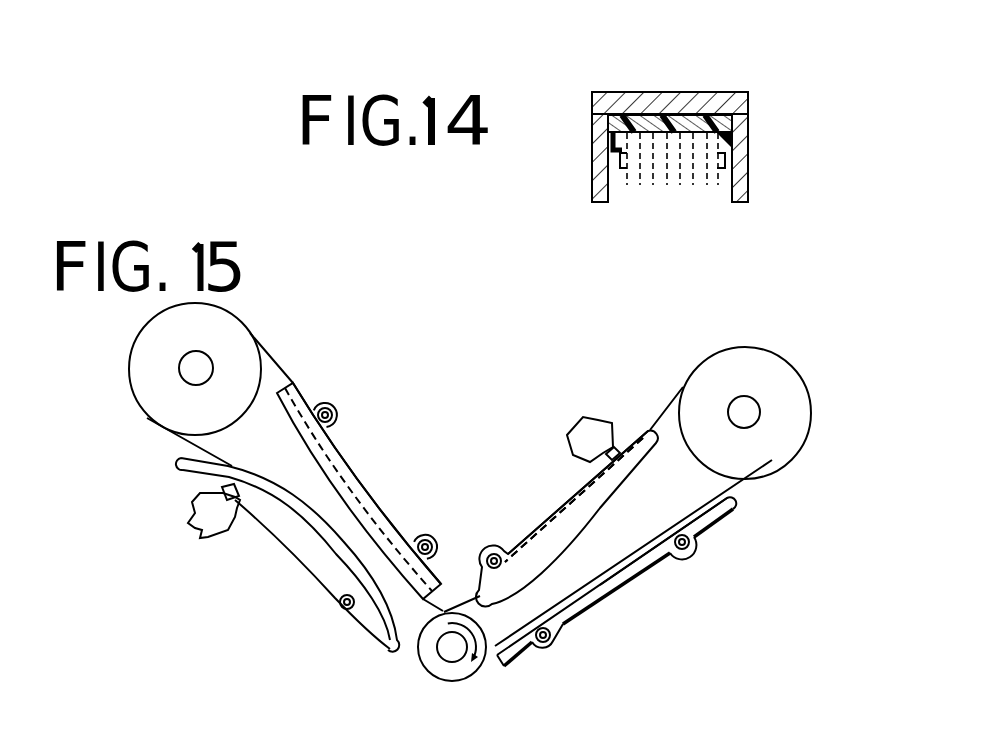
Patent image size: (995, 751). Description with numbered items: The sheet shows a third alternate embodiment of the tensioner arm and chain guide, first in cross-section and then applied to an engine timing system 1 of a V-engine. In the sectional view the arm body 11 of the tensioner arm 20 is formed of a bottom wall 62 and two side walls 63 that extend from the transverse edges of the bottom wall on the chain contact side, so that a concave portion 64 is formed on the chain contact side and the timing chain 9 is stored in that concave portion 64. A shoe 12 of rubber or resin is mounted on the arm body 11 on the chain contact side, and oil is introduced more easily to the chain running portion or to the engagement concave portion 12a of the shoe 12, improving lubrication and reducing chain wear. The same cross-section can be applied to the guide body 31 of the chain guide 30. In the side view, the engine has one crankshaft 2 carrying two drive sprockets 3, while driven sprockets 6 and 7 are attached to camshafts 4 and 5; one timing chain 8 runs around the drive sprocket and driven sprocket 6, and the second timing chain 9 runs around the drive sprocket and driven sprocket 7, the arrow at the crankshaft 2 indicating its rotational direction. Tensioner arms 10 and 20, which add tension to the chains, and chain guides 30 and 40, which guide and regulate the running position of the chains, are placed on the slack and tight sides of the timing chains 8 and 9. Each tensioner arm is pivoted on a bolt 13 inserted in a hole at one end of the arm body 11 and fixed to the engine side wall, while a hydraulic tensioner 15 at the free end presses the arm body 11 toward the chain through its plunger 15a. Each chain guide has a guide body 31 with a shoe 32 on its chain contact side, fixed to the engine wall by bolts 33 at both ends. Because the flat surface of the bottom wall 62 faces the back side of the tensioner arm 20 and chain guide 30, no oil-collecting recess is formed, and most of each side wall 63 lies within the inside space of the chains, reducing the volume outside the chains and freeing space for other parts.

In FIG. 15, the engine timing system 1 is at (467, 358).
In FIG. 15, the crankshaft 2 is at (437, 632).
In FIG. 15, the drive sprocket 3 is at (455, 669).
In FIG. 15, the camshaft 4 is at (197, 367).
In FIG. 15, the camshaft 5 is at (746, 412).
In FIG. 15, the driven sprocket 6 is at (163, 394).
In FIG. 15, the driven sprocket 7 is at (765, 460).
In FIG. 15, the timing chain 8 is at (271, 362).
In FIG. 14, the timing chain 9 is at (660, 190).
In FIG. 15, the timing chain 9 is at (743, 487).
In FIG. 15, the tensioner arm 10 is at (312, 570).
In FIG. 14, the main body 11 is at (679, 161).
In FIG. 15, the main body 11 is at (290, 527).
In FIG. 14, the shoe 12 is at (621, 179).
In FIG. 15, the shoe 12 is at (232, 465).
In FIG. 14, the engagement concave portion 12a is at (630, 146).
In FIG. 15, the bolt 13 is at (345, 608).
In FIG. 15, the hydraulic tensioner 15 is at (205, 530).
In FIG. 15, the plunger 15a is at (222, 489).
In FIG. 14, the tensioner arm 20 is at (672, 141).
In FIG. 15, the tensioner arm 20 is at (537, 527).
In FIG. 15, the chain guide 30 is at (356, 454).
In FIG. 15, the guide body 31 is at (372, 512).
In FIG. 15, the shoe 32 is at (325, 462).
In FIG. 15, the bolt 33 is at (330, 408).
In FIG. 15, the chain guide 40 is at (650, 568).
In FIG. 14, the bottom wall 62 is at (730, 96).
In FIG. 14, the side wall 63 is at (745, 172).
In FIG. 14, the concave portion 64 is at (733, 178).